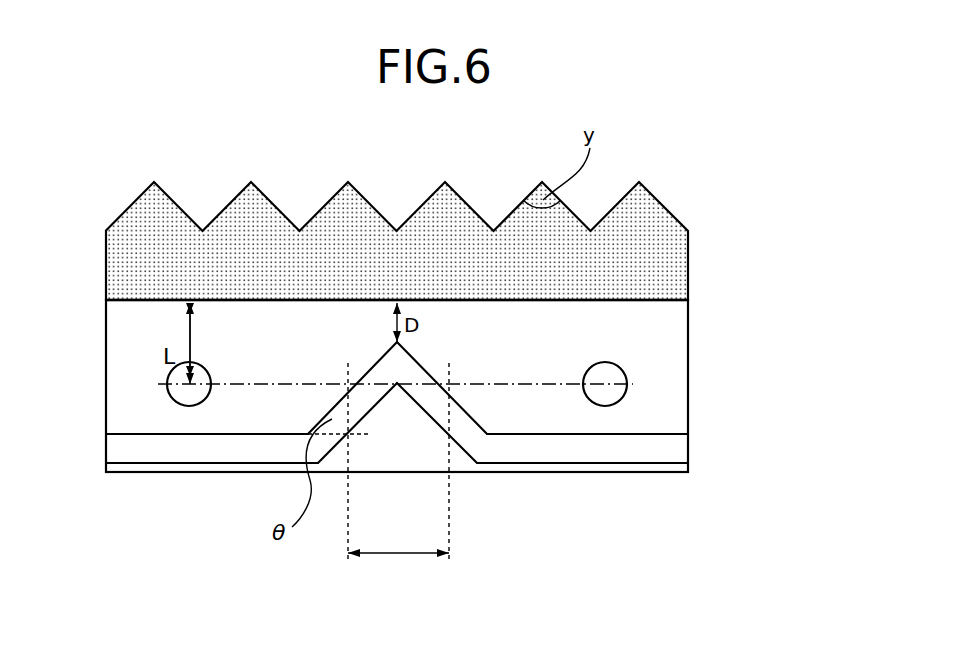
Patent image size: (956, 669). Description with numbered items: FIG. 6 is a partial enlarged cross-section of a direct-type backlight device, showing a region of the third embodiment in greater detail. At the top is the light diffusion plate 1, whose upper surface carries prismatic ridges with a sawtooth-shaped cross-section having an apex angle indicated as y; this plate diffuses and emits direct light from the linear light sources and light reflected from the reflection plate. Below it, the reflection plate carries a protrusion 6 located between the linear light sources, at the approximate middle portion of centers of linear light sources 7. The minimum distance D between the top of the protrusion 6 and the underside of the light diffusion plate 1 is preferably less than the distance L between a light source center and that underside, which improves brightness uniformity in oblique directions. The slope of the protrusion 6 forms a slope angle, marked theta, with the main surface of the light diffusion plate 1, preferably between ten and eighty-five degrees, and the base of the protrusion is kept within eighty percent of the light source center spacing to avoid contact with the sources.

The light diffusion plate 1 is at (688, 262).
The protrusion on reflection plate 6 is at (402, 365).
The approximate middle portion of centers of linear light sources 7 is at (402, 556).